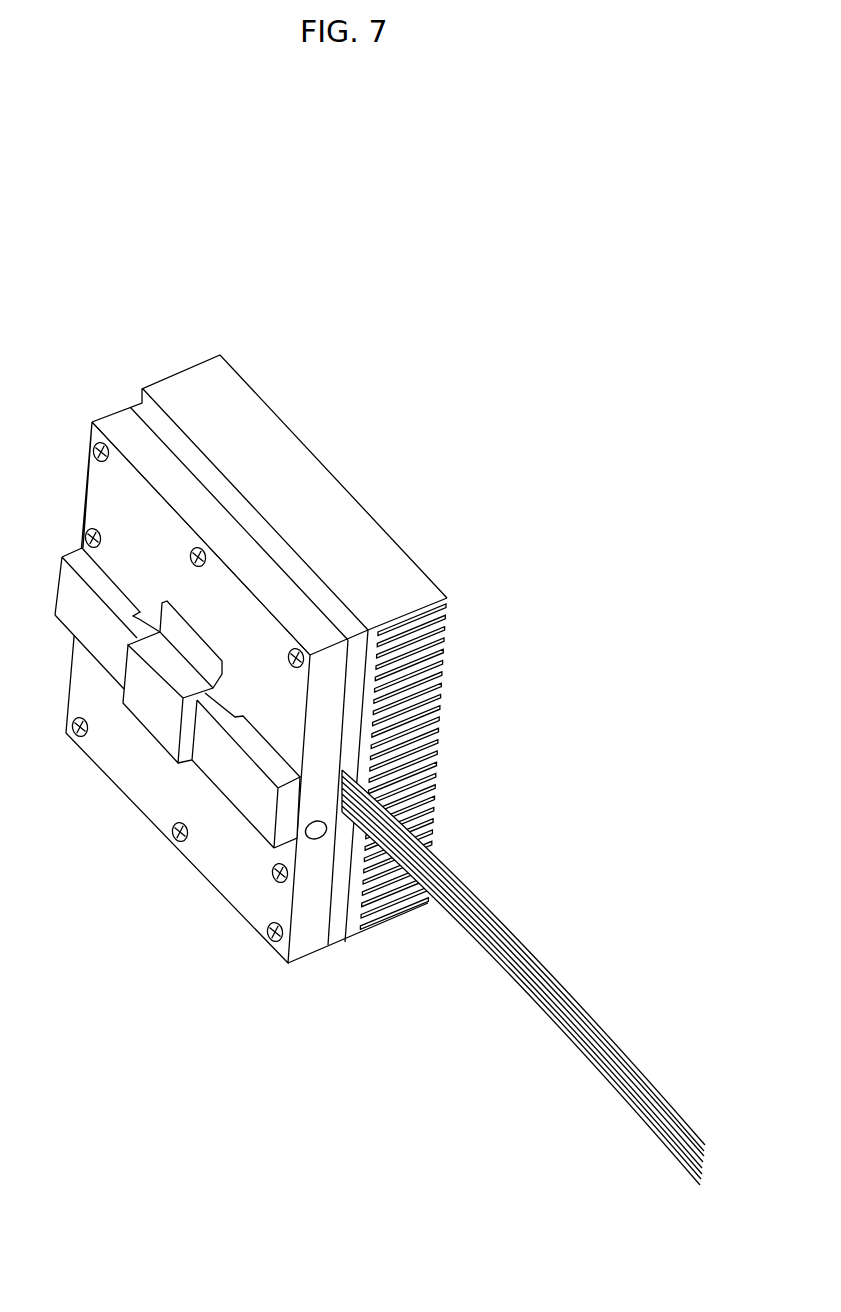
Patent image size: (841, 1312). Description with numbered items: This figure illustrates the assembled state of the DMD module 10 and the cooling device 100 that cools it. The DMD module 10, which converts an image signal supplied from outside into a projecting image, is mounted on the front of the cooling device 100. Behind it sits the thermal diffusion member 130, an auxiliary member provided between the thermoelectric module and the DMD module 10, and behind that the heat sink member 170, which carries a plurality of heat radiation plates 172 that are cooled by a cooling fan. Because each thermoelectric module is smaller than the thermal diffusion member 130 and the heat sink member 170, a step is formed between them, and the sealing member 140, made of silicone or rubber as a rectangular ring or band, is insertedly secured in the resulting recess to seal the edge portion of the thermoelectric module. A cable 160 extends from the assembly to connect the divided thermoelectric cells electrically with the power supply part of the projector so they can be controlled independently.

The cooling device 100 is at (440, 323).
The DMD module 10 is at (168, 728).
The thermal diffusion member 130 is at (310, 959).
The sealing member 140 is at (340, 946).
The cable 160 is at (462, 890).
The heat sink member 170 is at (410, 807).
The heat radiation plates 172 is at (446, 622).